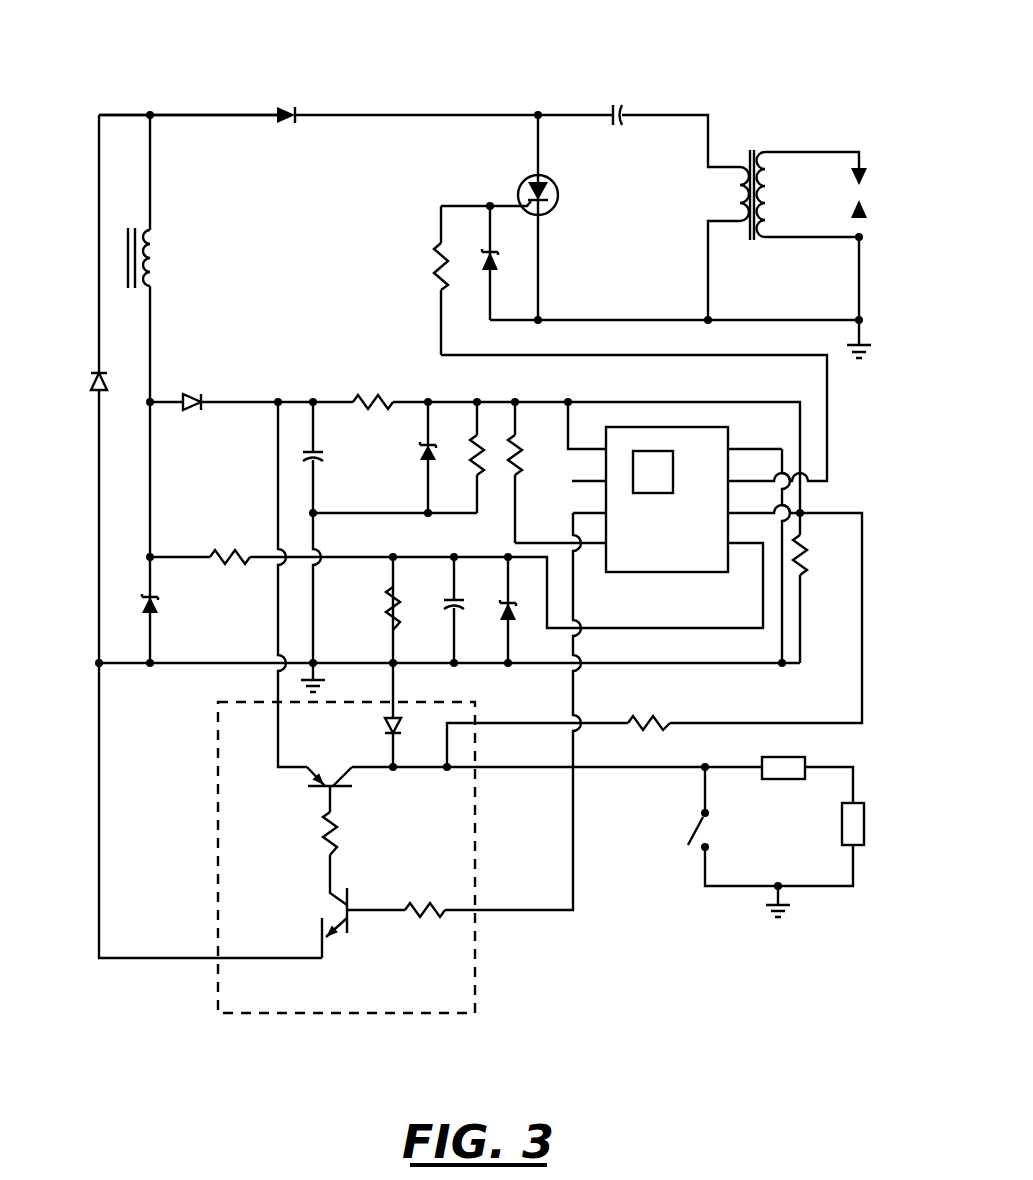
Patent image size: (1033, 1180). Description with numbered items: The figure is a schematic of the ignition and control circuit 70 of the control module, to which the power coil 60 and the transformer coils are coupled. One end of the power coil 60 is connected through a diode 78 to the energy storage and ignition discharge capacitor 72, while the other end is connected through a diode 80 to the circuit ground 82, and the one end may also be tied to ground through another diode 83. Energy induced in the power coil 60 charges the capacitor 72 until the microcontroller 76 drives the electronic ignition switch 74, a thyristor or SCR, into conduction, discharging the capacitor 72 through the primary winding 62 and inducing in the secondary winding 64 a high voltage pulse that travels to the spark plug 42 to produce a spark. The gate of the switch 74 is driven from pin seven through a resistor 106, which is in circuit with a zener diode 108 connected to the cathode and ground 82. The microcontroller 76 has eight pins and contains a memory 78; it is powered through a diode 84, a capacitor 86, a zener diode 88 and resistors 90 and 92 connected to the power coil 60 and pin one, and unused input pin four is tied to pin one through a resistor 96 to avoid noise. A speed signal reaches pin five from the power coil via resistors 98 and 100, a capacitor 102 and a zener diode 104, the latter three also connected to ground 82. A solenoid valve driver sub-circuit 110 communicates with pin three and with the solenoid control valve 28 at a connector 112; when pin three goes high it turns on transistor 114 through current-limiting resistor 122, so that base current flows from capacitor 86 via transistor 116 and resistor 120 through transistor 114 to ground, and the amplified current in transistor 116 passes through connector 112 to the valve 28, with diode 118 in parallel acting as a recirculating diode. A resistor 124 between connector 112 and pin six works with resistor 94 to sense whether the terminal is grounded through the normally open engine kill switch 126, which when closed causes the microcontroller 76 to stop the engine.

The ignition and control circuit 70 is at (155, 85).
The power coil 60 is at (118, 253).
The diode 78 is at (298, 125).
The electronic ignition switch 74 is at (522, 183).
The zener diode 108 is at (490, 256).
The resistor 106 is at (437, 272).
The energy storage and ignition discharge capacitor 72 is at (615, 124).
The primary winding 62 is at (738, 196).
The secondary winding 64 is at (768, 196).
The spark plug 42 is at (876, 192).
The circuit ground 82 is at (865, 345).
The diode 83 is at (92, 377).
The diode 84 is at (200, 408).
The capacitor 86 is at (318, 454).
The zener diode 88 is at (426, 447).
The resistor 90 is at (372, 395).
The resistor 92 is at (478, 460).
The resistor 96 is at (516, 456).
The resistor 98 is at (228, 550).
The diode 80 is at (156, 598).
The resistor 100 is at (390, 606).
The capacitor 102 is at (452, 600).
The zener diode 104 is at (507, 603).
The microcontroller 76 is at (680, 574).
The resistor 94 is at (805, 580).
The resistor 124 is at (672, 718).
The node or connector 112 is at (808, 762).
The engine kill switch 126 is at (697, 830).
The solenoid control valve 28 is at (866, 825).
The diode 118 is at (387, 735).
The transistor 116 is at (315, 790).
The resistor 120 is at (327, 848).
The resistor 122 is at (422, 905).
The transistor 114 is at (348, 930).
The solenoid valve driver sub-circuit 110 is at (408, 1013).